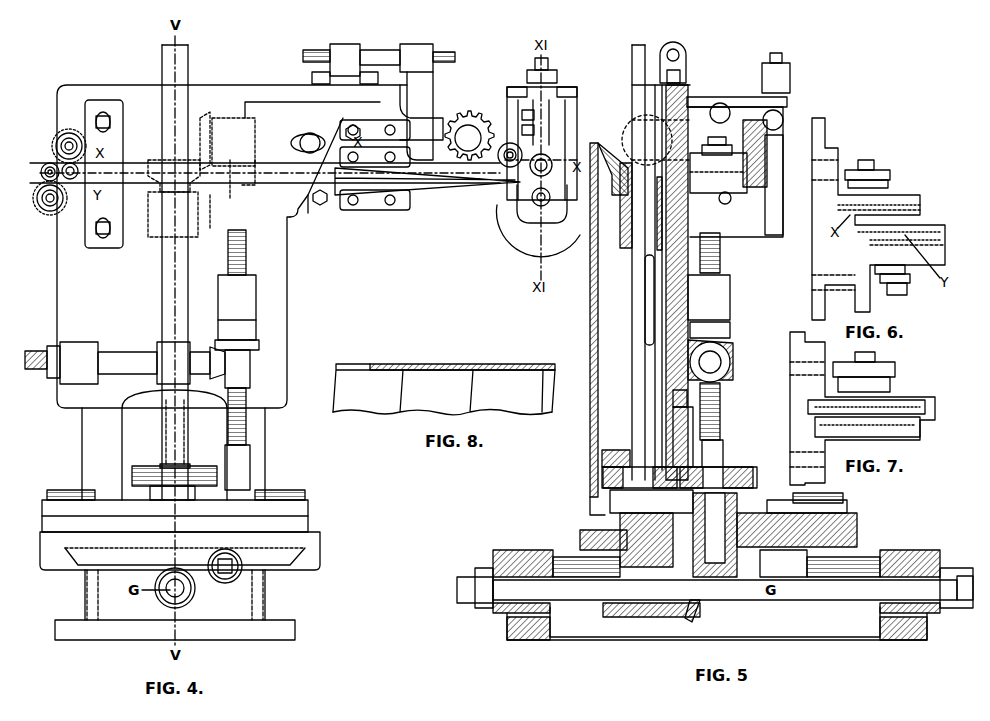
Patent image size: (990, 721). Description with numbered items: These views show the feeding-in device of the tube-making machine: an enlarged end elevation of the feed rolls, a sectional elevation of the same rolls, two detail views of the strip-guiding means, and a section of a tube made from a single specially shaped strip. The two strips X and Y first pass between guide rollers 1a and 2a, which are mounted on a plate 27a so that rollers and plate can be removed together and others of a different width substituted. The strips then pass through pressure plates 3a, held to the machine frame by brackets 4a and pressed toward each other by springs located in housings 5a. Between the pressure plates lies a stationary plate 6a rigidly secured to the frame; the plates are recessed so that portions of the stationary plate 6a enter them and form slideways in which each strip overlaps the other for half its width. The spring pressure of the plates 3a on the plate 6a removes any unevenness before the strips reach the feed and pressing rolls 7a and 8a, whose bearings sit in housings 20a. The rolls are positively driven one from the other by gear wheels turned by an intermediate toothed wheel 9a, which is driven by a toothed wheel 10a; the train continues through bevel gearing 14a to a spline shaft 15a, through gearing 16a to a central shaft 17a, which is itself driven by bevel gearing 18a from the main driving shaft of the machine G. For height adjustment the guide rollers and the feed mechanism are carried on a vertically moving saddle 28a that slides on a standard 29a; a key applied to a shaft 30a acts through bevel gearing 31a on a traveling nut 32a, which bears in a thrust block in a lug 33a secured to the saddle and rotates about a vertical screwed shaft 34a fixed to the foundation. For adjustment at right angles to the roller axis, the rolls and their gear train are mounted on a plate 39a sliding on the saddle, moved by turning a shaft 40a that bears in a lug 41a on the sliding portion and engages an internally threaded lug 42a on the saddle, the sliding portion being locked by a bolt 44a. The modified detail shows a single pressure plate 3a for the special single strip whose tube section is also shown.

In FIG. 4, the guide roller 1a is at (52, 141).
In FIG. 4, the guide roller 2a is at (50, 212).
In FIG. 4, the pressure plate 3a is at (452, 176).
In FIG. 5, the pressure plate 3a is at (722, 188).
In FIG. 6, the pressure plate 3a is at (905, 205).
In FIG. 7, the pressure plate 3a is at (910, 405).
In FIG. 5, the bracket 4a is at (740, 185).
In FIG. 6, the bracket 4a is at (895, 190).
In FIG. 5, the housing 5a is at (722, 150).
In FIG. 6, the housing 5a is at (860, 172).
In FIG. 5, the stationary plate 6a is at (783, 120).
In FIG. 6, the stationary plate 6a is at (925, 233).
In FIG. 7, the stationary plate 6a is at (905, 432).
In FIG. 4, the upper feed roll 7a is at (560, 160).
In FIG. 5, the upper feed roll 7a is at (605, 148).
In FIG. 4, the feed roll 8a is at (548, 205).
In FIG. 4, the intermediate toothed wheel 9a is at (500, 170).
In FIG. 4, the toothed wheel 10a is at (472, 112).
In FIG. 4, the bevel gearing 14a is at (200, 163).
In FIG. 4, the spline shaft 15a is at (178, 434).
In FIG. 4, the gearing 16a is at (160, 468).
In FIG. 5, the gearing 16a is at (628, 465).
In FIG. 5, the central shaft 17a is at (725, 470).
In FIG. 5, the bevel gearing 18a is at (700, 612).
In FIG. 4, the housing 20a is at (533, 205).
In FIG. 4, the plate 27a is at (112, 128).
In FIG. 4, the saddle 28a is at (211, 96).
In FIG. 4, the standard 29a is at (258, 449).
In FIG. 4, the shaft 30a is at (47, 352).
In FIG. 4, the bevel gearing 31a is at (258, 350).
In FIG. 4, the traveling nut 32a is at (244, 372).
In FIG. 4, the lug 33a is at (244, 298).
In FIG. 4, the vertical screwed shaft 34a is at (248, 421).
In FIG. 4, the plate 39a is at (425, 110).
In FIG. 4, the shaft 40a is at (390, 52).
In FIG. 4, the lug 41a is at (425, 50).
In FIG. 4, the internally threaded lug 42a is at (342, 52).
In FIG. 4, the bolt 44a is at (312, 138).
In FIG. 5, the main driving shaft G is at (715, 588).